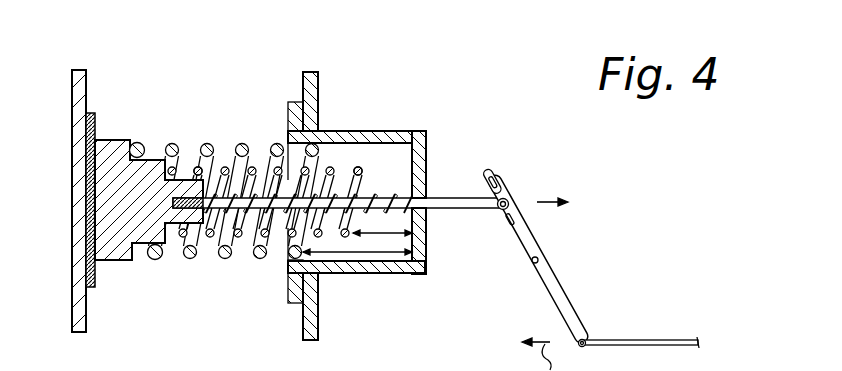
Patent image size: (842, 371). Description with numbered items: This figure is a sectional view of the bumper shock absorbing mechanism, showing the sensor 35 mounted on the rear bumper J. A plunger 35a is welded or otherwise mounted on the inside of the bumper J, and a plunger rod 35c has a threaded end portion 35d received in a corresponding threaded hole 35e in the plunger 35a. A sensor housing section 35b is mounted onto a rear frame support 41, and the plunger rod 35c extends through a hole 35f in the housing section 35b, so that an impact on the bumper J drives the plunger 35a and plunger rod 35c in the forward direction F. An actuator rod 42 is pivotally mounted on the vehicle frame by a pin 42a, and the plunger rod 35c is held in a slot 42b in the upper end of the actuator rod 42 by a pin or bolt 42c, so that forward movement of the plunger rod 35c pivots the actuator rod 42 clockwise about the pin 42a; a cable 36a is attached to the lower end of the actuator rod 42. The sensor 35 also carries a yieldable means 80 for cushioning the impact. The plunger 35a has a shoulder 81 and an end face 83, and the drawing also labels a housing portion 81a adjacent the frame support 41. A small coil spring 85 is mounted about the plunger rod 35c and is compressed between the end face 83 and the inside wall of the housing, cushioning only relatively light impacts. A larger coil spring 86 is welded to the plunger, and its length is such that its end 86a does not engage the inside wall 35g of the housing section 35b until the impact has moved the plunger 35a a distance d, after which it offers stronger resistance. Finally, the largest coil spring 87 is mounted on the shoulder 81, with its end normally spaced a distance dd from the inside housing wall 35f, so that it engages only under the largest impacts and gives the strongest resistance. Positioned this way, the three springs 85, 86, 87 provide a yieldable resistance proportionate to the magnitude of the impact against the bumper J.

The rear bumper J is at (70, 202).
The sensor 35 is at (147, 121).
The plunger 35a is at (120, 140).
The sensor housing section 35b is at (355, 275).
The plunger rod 35c is at (452, 197).
The threaded end portion 35d is at (176, 188).
The threaded hole 35e is at (162, 250).
The hole 35f is at (428, 227).
The inside wall 35g is at (398, 274).
The cable 36a is at (660, 340).
The rear frame support 41 is at (304, 73).
The actuator rod 42 is at (552, 287).
The pin 42a is at (541, 254).
The slot 42b is at (500, 183).
The pin or bolt 42c is at (510, 201).
The yieldable means 80 is at (229, 80).
The shoulder 81 is at (138, 258).
The housing top wall 81a is at (325, 134).
The end face 83 is at (206, 170).
The coil spring 85 is at (376, 193).
The coil spring 86 is at (334, 167).
The end of coil spring 86a is at (366, 177).
The coil spring 87 is at (264, 143).
The forward direction F is at (553, 205).
The distance d is at (382, 227).
The distance dd is at (357, 246).